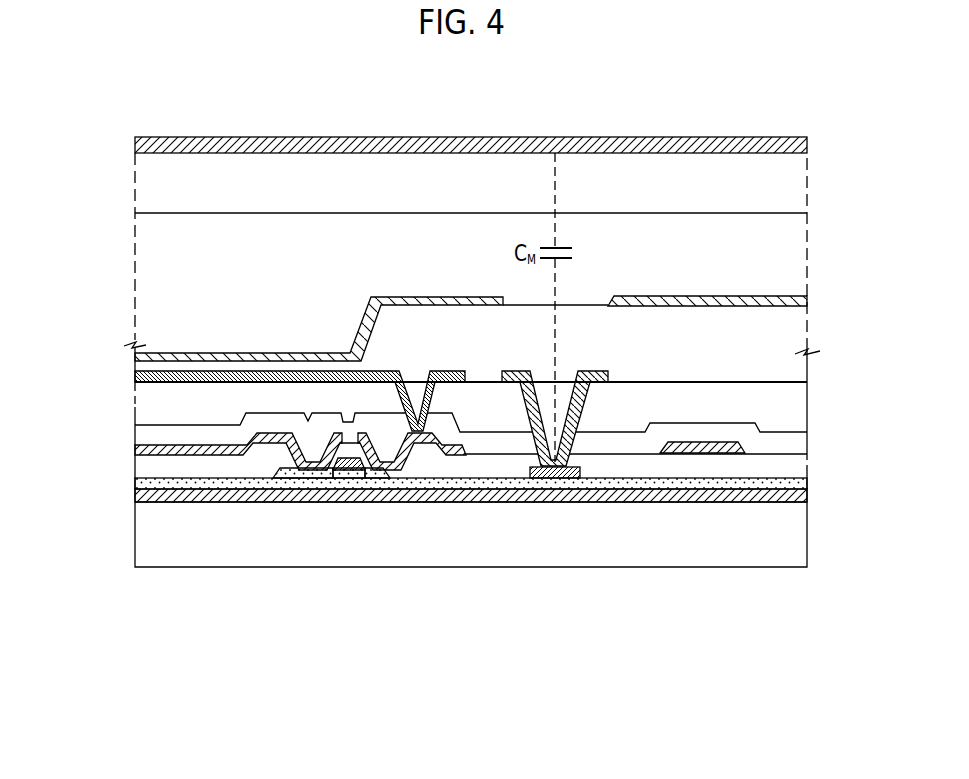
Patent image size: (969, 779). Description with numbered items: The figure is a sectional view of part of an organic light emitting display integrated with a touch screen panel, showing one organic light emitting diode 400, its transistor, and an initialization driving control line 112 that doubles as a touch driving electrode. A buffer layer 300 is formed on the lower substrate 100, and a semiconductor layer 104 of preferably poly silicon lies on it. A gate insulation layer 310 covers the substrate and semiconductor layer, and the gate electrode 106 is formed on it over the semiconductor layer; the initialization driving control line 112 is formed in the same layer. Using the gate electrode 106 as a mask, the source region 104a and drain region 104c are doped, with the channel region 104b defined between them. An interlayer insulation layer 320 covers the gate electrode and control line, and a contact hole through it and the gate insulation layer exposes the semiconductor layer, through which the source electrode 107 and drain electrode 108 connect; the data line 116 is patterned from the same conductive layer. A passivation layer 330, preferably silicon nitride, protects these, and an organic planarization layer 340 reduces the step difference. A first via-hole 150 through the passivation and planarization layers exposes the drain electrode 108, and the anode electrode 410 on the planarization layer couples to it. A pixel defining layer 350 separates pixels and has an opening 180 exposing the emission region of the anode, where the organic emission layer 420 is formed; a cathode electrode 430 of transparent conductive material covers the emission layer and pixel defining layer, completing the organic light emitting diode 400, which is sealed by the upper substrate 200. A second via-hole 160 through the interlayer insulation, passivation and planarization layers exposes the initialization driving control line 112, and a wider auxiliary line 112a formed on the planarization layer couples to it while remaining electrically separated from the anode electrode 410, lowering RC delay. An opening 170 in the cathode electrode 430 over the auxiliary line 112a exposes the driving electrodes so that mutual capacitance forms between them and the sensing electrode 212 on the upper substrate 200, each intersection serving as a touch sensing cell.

The lower substrate 100 is at (810, 541).
The semiconductor layer 104 is at (353, 569).
The source region 104a is at (313, 478).
The channel region 104b is at (347, 478).
The drain region 104c is at (385, 478).
The gate electrode 106 is at (340, 458).
The source electrode 107 is at (293, 460).
The drain electrode 108 is at (433, 474).
The initialization driving control line 112 is at (548, 480).
The auxiliary line 112a is at (605, 371).
The data line 116 is at (704, 451).
The first via-hole 150 is at (418, 368).
The second via-hole 160 is at (543, 386).
The opening 170 is at (588, 296).
The opening 180 is at (258, 326).
The upper substrate 200 is at (808, 181).
The sensing electrode 212 is at (812, 147).
The buffer layer 300 is at (136, 496).
The gate insulation layer 310 is at (136, 483).
The interlayer insulation layer 320 is at (137, 460).
The passivation layer 330 is at (136, 440).
The planarization layer 340 is at (136, 415).
The pixel defining layer 350 is at (812, 322).
The organic light emitting diode 400 is at (416, 364).
The anode electrode 410 is at (136, 384).
The organic emission layer 420 is at (136, 372).
The cathode electrode 430 is at (136, 350).